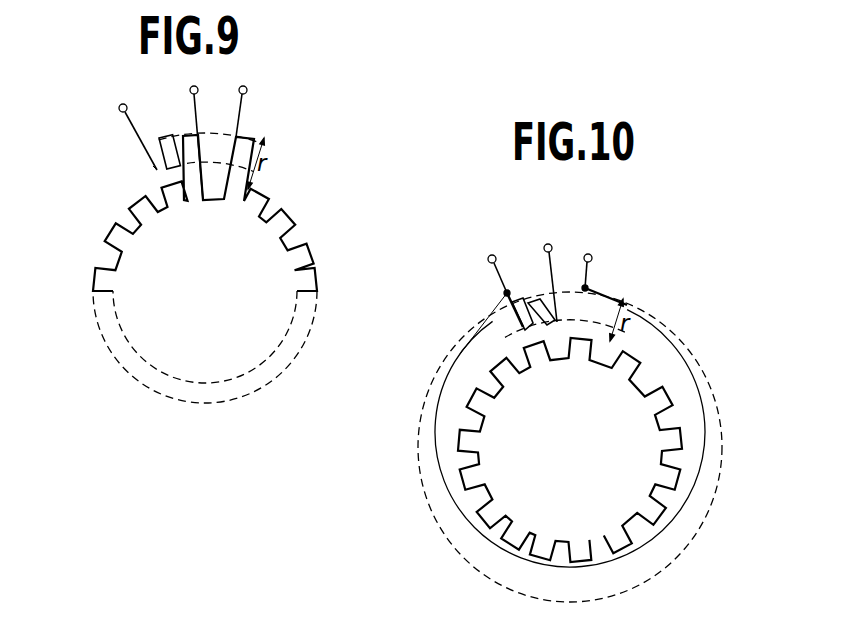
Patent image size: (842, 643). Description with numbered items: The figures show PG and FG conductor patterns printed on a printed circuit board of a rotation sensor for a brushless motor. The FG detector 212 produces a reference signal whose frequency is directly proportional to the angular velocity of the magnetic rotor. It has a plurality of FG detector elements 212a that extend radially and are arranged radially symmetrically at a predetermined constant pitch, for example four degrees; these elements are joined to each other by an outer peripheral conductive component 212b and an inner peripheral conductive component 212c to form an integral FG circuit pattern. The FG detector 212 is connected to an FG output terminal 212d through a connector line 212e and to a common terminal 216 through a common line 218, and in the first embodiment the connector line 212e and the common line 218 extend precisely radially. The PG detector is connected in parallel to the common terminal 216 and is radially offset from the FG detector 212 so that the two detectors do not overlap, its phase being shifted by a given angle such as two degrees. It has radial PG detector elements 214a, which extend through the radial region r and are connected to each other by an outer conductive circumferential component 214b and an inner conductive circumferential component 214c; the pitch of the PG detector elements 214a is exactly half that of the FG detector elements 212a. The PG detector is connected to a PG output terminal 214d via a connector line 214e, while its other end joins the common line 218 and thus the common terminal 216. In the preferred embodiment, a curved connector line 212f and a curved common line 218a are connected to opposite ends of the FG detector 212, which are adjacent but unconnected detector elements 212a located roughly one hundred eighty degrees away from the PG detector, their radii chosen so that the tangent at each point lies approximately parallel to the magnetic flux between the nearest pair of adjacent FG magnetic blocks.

In FIG. 9, the FG detector 212 is at (300, 228).
In FIG. 10, the FG detector 212 is at (688, 405).
In FIG. 9, the FG detector elements 212a is at (313, 273).
In FIG. 10, the FG detector elements 212a is at (672, 468).
In FIG. 9, the outer peripheral conductive component 212b is at (314, 251).
In FIG. 10, the outer peripheral conductive component 212b is at (682, 458).
In FIG. 9, the inner peripheral conductive component 212c is at (283, 243).
In FIG. 10, the inner peripheral conductive component 212c is at (658, 468).
In FIG. 9, the FG output terminal 212d is at (247, 89).
In FIG. 10, the FG output terminal 212d is at (592, 256).
In FIG. 9, the connector line 212e is at (243, 112).
In FIG. 10, the connector line 212f is at (645, 310).
In FIG. 9, the PG detector elements 214a is at (156, 156).
In FIG. 10, the PG detector elements 214a is at (513, 307).
In FIG. 9, the outer conductive circumferential component 214b is at (160, 137).
In FIG. 10, the outer conductive circumferential component 214b is at (531, 300).
In FIG. 10, the inner conductive circumferential component 214c is at (556, 323).
In FIG. 9, the PG output terminal 214d is at (119, 107).
In FIG. 10, the PG output terminal 214d is at (552, 244).
In FIG. 9, the connector line 214e is at (130, 121).
In FIG. 10, the connector line 214e is at (549, 268).
In FIG. 9, the common terminal 216 is at (191, 88).
In FIG. 10, the common terminal 216 is at (488, 259).
In FIG. 9, the common line 218 is at (195, 117).
In FIG. 10, the common line 218 is at (504, 293).
In FIG. 10, the common line 218a is at (434, 433).